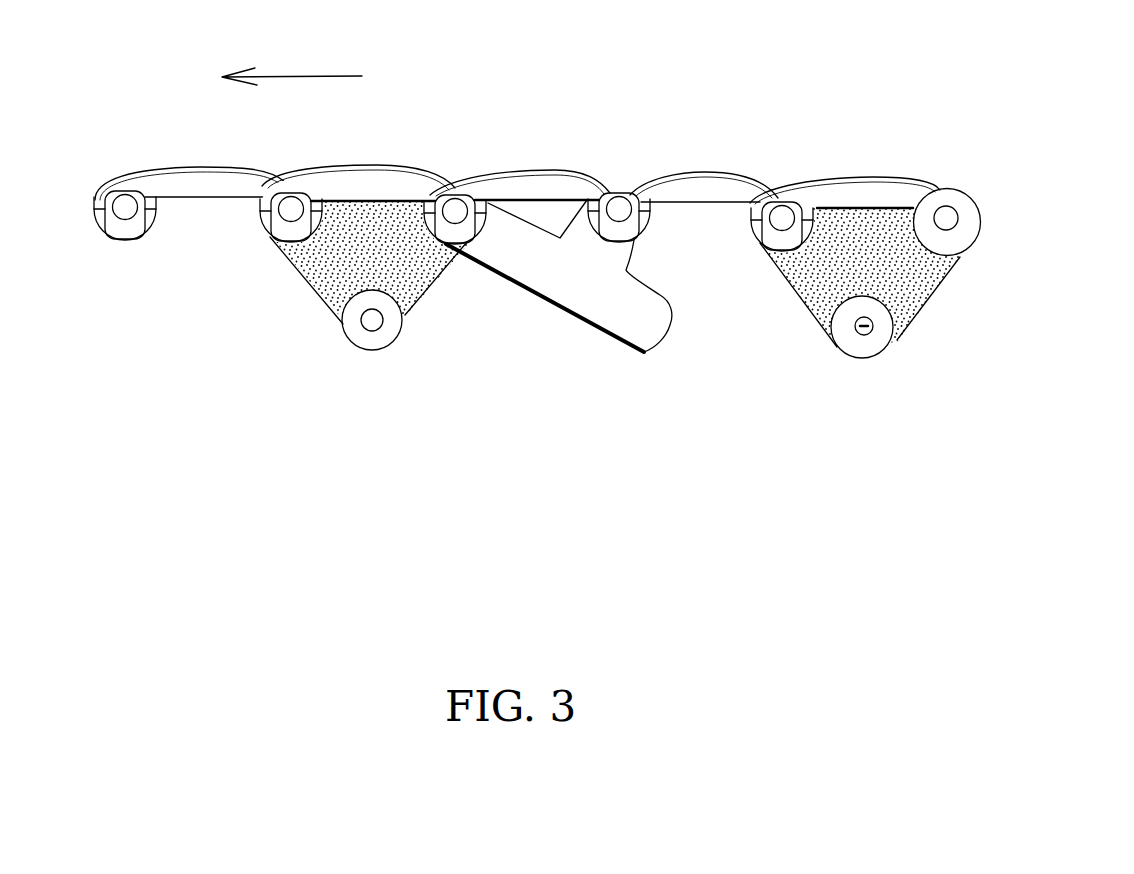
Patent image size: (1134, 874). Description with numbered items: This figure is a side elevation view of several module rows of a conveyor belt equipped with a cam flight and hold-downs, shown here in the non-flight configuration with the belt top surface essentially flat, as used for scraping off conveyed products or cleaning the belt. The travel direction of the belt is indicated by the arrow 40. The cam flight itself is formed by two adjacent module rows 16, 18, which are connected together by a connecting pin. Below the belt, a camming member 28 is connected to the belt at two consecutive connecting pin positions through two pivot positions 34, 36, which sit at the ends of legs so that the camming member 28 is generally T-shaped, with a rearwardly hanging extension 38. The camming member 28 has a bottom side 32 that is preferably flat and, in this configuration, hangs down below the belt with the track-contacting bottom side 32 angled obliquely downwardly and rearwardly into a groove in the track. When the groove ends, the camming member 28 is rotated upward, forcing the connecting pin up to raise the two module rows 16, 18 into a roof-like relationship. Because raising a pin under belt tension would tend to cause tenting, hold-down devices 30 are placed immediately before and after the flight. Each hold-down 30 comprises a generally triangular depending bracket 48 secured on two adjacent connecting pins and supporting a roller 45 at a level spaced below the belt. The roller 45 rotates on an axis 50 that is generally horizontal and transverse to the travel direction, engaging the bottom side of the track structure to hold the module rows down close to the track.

The module row 16 is at (562, 172).
The module row 18 is at (720, 158).
The camming member 28 is at (588, 322).
The hold-down device 30 is at (578, 348).
The bottom side 32 is at (597, 328).
The pivot position 34 is at (457, 213).
The pivot position 36 is at (619, 209).
The rearwardly hanging extension 38 is at (652, 340).
The arrow 40 is at (305, 75).
The roller 45 is at (398, 318).
The triangular depending bracket 48 is at (323, 268).
The axis 50 is at (865, 332).